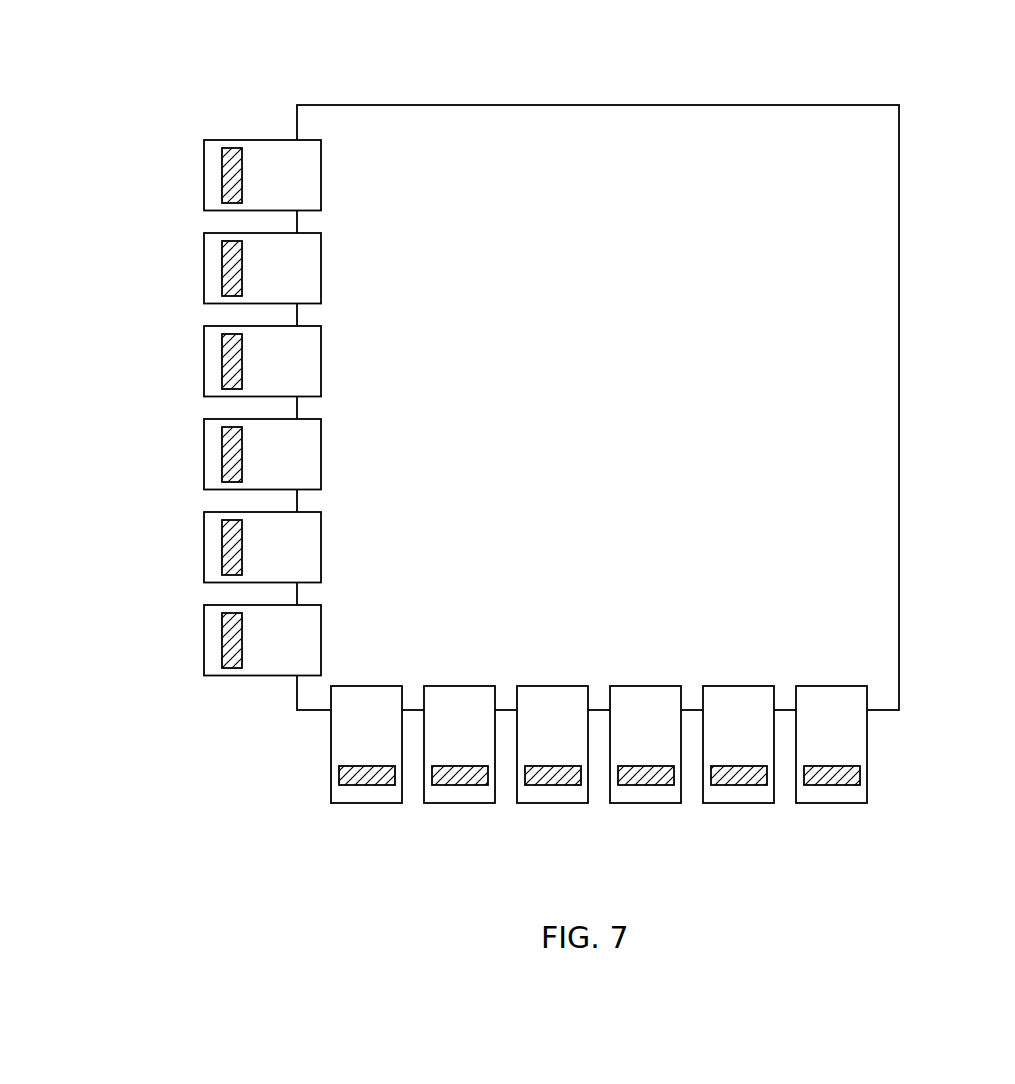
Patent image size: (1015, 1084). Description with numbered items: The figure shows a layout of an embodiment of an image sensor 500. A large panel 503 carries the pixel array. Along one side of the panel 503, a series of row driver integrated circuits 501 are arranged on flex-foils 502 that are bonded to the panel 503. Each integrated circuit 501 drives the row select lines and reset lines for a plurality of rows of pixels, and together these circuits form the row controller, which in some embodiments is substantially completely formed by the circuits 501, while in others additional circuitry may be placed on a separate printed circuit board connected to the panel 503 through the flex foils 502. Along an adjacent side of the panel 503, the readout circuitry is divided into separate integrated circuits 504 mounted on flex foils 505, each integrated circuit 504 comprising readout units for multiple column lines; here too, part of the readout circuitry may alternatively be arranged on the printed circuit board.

The image sensor 500 is at (130, 59).
The row driver integrated circuit 501 is at (228, 272).
The flex-foil 502 is at (199, 360).
The panel 503 is at (883, 173).
The readout integrated circuit 504 is at (858, 778).
The flex foil 505 is at (728, 806).